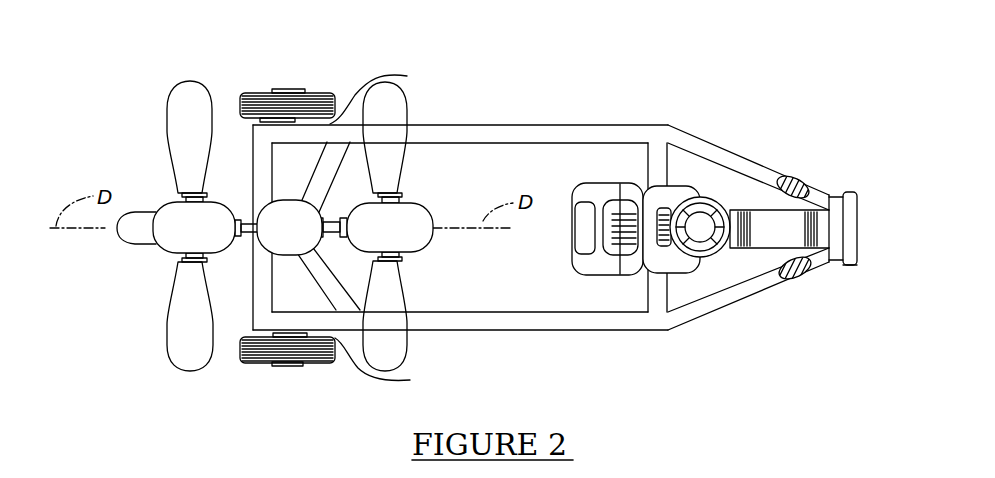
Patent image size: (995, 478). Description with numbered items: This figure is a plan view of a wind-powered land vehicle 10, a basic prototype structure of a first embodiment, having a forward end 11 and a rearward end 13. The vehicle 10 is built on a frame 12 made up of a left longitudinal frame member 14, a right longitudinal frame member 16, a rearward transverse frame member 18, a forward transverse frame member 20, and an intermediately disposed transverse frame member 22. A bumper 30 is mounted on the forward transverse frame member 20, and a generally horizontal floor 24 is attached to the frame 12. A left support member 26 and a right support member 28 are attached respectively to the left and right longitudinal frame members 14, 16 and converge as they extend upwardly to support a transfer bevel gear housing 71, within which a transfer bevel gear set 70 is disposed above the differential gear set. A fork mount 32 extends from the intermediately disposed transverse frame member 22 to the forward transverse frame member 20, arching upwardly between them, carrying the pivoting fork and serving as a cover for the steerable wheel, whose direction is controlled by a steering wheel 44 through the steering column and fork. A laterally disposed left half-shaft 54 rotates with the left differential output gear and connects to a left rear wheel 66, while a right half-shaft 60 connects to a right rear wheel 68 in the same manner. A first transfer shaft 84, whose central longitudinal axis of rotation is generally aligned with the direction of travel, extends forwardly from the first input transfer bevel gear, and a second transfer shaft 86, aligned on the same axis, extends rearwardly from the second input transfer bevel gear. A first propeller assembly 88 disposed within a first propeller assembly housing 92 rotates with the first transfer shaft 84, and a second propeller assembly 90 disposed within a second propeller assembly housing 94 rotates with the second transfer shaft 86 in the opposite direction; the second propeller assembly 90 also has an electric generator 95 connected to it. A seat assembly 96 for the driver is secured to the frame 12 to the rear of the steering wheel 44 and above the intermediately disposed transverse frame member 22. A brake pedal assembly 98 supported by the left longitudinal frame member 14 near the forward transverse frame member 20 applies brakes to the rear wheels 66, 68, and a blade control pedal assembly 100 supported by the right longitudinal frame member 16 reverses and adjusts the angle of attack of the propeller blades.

The wind-powered land vehicle 10 is at (607, 60).
The forward end 11 is at (880, 174).
The frame 12 is at (630, 103).
The rearward end 13 is at (155, 340).
The left longitudinal frame member 14 is at (548, 123).
The right longitudinal frame member 16 is at (493, 331).
The rearward transverse frame member 18 is at (253, 192).
The forward transverse frame member 20 is at (846, 192).
The intermediately disposed transverse frame member 22 is at (648, 294).
The floor 24 is at (303, 181).
The left support member 26 is at (320, 158).
The right support member 28 is at (327, 288).
The bumper 30 is at (852, 267).
The fork mount 32 is at (738, 208).
The steering wheel 44 is at (707, 195).
The left half-shaft 54 is at (384, 96).
The right half-shaft 60 is at (385, 364).
The left rear wheel 66 is at (311, 92).
The right rear wheel 68 is at (313, 365).
The transfer bevel gear set 70 is at (281, 265).
The transfer bevel gear housing 71 is at (293, 256).
The first transfer shaft 84 is at (330, 238).
The second transfer shaft 86 is at (250, 220).
The first propeller assembly 88 is at (429, 192).
The second propeller assembly 90 is at (151, 167).
The first propeller assembly housing 92 is at (440, 215).
The second propeller assembly housing 94 is at (160, 205).
The electric generator 95 is at (130, 243).
The seat assembly 96 is at (598, 167).
The brake pedal assembly 98 is at (806, 186).
The blade control pedal assembly 100 is at (781, 281).